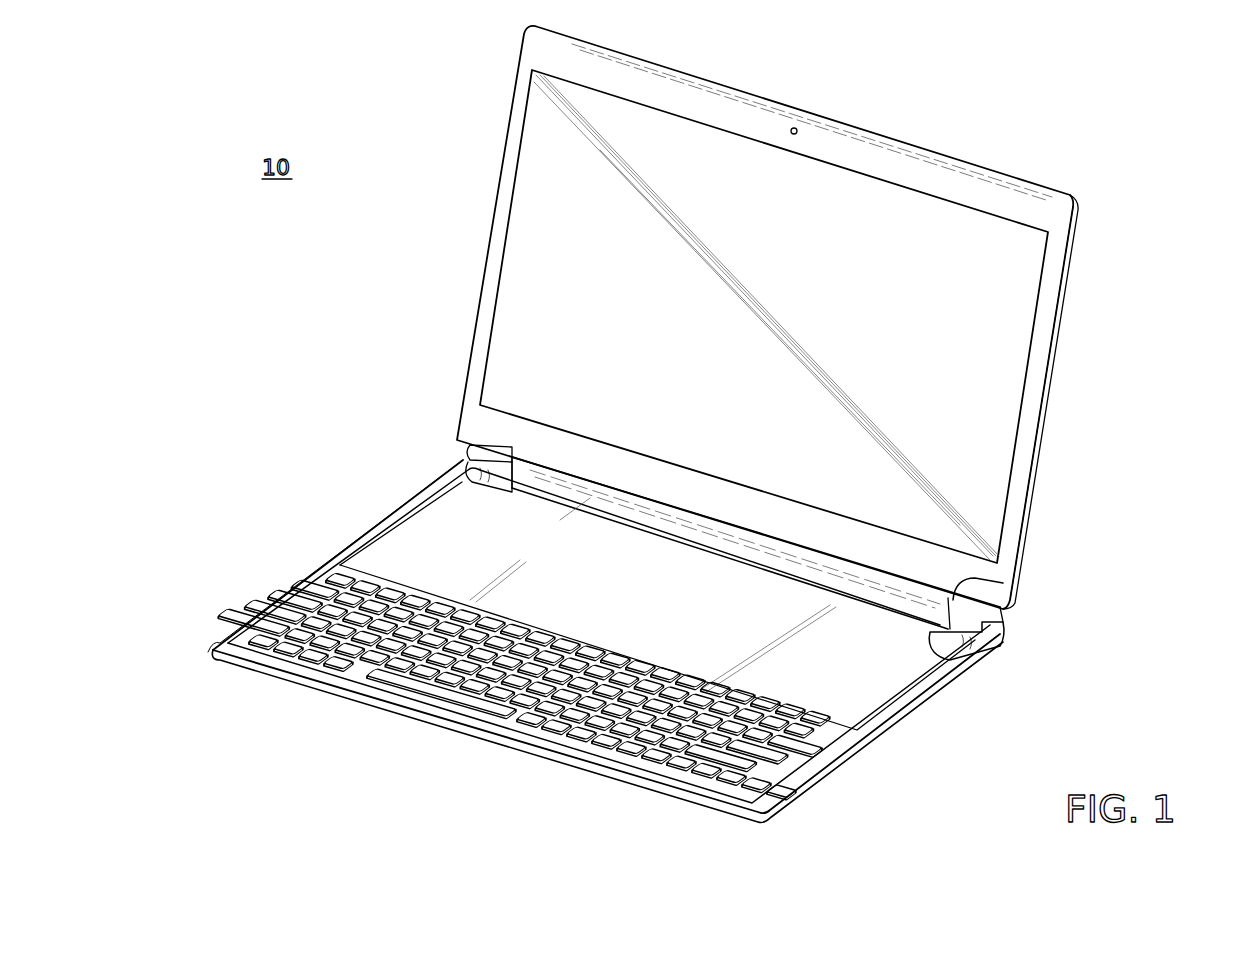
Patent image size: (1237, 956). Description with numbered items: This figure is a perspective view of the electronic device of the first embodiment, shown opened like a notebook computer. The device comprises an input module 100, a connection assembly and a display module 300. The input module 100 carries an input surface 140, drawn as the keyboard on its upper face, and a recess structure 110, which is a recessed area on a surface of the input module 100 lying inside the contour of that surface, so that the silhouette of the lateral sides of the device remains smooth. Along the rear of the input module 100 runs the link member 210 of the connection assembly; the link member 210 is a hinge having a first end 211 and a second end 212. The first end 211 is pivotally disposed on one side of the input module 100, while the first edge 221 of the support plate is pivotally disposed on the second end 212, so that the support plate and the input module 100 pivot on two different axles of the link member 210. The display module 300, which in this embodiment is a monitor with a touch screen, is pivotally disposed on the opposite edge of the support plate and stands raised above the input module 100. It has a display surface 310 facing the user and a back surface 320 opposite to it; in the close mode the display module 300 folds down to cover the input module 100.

The input module 100 is at (623, 634).
The recess structure 110 is at (484, 542).
The input surface 140 is at (352, 628).
The link member 210 is at (805, 559).
The first end 211 is at (945, 650).
The second end 212 is at (953, 592).
The first edge 221 is at (1000, 612).
The display module 300 is at (760, 317).
The display surface 310 is at (557, 267).
The back surface 320 is at (1053, 403).